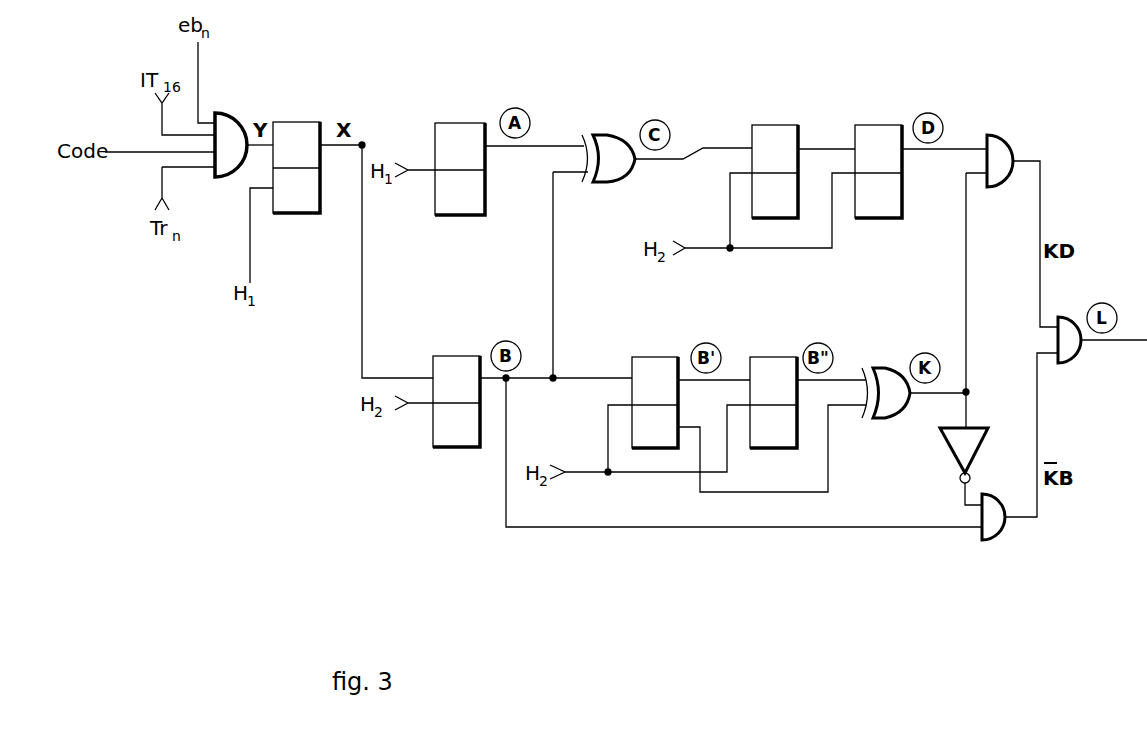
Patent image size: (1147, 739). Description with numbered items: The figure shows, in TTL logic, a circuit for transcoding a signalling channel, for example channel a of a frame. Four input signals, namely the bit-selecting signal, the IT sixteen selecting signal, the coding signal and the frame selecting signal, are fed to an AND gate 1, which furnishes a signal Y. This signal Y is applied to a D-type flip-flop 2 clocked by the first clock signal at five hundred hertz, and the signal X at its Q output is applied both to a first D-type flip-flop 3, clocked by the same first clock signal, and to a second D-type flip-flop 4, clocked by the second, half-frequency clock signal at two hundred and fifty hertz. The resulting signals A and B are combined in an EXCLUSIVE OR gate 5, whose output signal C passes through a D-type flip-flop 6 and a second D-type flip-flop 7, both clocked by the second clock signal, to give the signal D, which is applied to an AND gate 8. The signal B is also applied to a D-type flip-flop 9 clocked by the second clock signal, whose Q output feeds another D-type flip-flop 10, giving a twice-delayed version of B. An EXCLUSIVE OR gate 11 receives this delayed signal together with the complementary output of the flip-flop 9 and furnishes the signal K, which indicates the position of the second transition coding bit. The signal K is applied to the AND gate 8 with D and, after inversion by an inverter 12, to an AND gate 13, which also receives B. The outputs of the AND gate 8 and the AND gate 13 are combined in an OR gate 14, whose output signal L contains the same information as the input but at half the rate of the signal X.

The AND gate 1 is at (231, 130).
The D-type flip-flop 2 is at (298, 195).
The D-type flip-flop 3 is at (457, 130).
The D-type flip-flop 4 is at (452, 435).
The EXCLUSIVE OR gate 5 is at (613, 147).
The D-type flip-flop 6 is at (778, 132).
The D-type flip-flop 7 is at (877, 135).
The AND gate 8 is at (1000, 140).
The D-type flip-flop 9 is at (652, 377).
The D-type flip-flop 10 is at (775, 373).
The EXCLUSIVE OR gate 11 is at (887, 380).
The inverter 12 is at (953, 450).
The AND gate 13 is at (1003, 535).
The OR gate 14 is at (1073, 360).